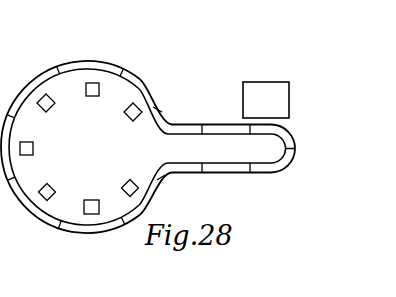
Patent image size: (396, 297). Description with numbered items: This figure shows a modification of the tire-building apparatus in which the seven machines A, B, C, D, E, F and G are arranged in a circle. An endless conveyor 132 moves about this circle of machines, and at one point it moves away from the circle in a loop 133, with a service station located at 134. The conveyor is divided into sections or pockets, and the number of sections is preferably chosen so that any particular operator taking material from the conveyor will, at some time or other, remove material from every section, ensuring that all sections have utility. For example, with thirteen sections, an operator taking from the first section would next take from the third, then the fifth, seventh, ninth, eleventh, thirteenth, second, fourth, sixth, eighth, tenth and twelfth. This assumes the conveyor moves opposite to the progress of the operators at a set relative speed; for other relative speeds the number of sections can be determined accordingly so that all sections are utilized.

The endless conveyor 132 is at (83, 67).
The loop 133 is at (248, 173).
The service station 134 is at (252, 82).